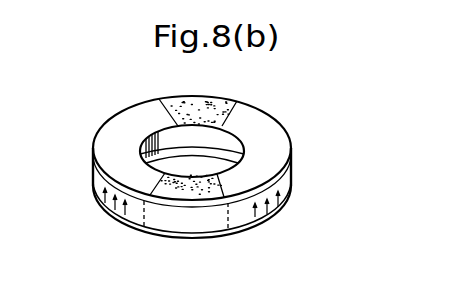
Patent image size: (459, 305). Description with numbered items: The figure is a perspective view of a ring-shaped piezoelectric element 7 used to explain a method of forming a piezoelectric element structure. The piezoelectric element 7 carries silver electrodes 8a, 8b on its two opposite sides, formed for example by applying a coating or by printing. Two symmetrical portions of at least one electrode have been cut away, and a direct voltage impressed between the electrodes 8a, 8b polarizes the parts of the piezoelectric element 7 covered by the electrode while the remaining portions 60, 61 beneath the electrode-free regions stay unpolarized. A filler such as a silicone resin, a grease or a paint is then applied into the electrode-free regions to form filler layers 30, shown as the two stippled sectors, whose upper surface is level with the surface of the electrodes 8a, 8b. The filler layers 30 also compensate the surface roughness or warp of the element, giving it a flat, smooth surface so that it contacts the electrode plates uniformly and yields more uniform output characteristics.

The piezoelectric element 7 is at (202, 175).
The silver electrode 8a is at (108, 141).
The silver electrode 8b is at (257, 227).
The filler layer 30 is at (237, 100).
The non-polarized portion 60 is at (163, 223).
The non-polarized portion 61 is at (190, 95).